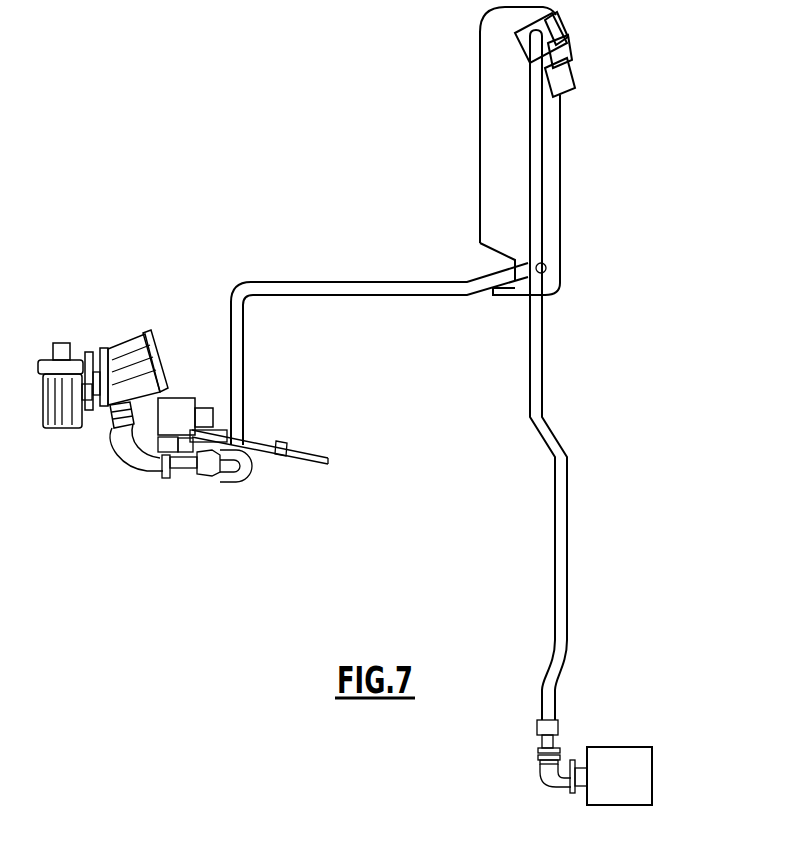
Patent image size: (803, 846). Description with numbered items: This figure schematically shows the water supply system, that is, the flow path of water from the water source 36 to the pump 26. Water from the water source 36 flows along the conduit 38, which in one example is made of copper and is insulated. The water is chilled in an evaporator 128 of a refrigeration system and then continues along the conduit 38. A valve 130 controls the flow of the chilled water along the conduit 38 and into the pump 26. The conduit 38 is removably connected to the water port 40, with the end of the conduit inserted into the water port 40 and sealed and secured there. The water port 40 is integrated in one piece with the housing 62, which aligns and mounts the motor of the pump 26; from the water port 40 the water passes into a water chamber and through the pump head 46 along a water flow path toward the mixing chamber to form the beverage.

The pump 26 is at (75, 280).
The water source 36 is at (636, 790).
The conduit 38 is at (348, 290).
The water port 40 is at (106, 415).
The pump head 46 is at (55, 412).
The housing 62 is at (127, 350).
The evaporator 128 is at (545, 200).
The valve 130 is at (166, 478).